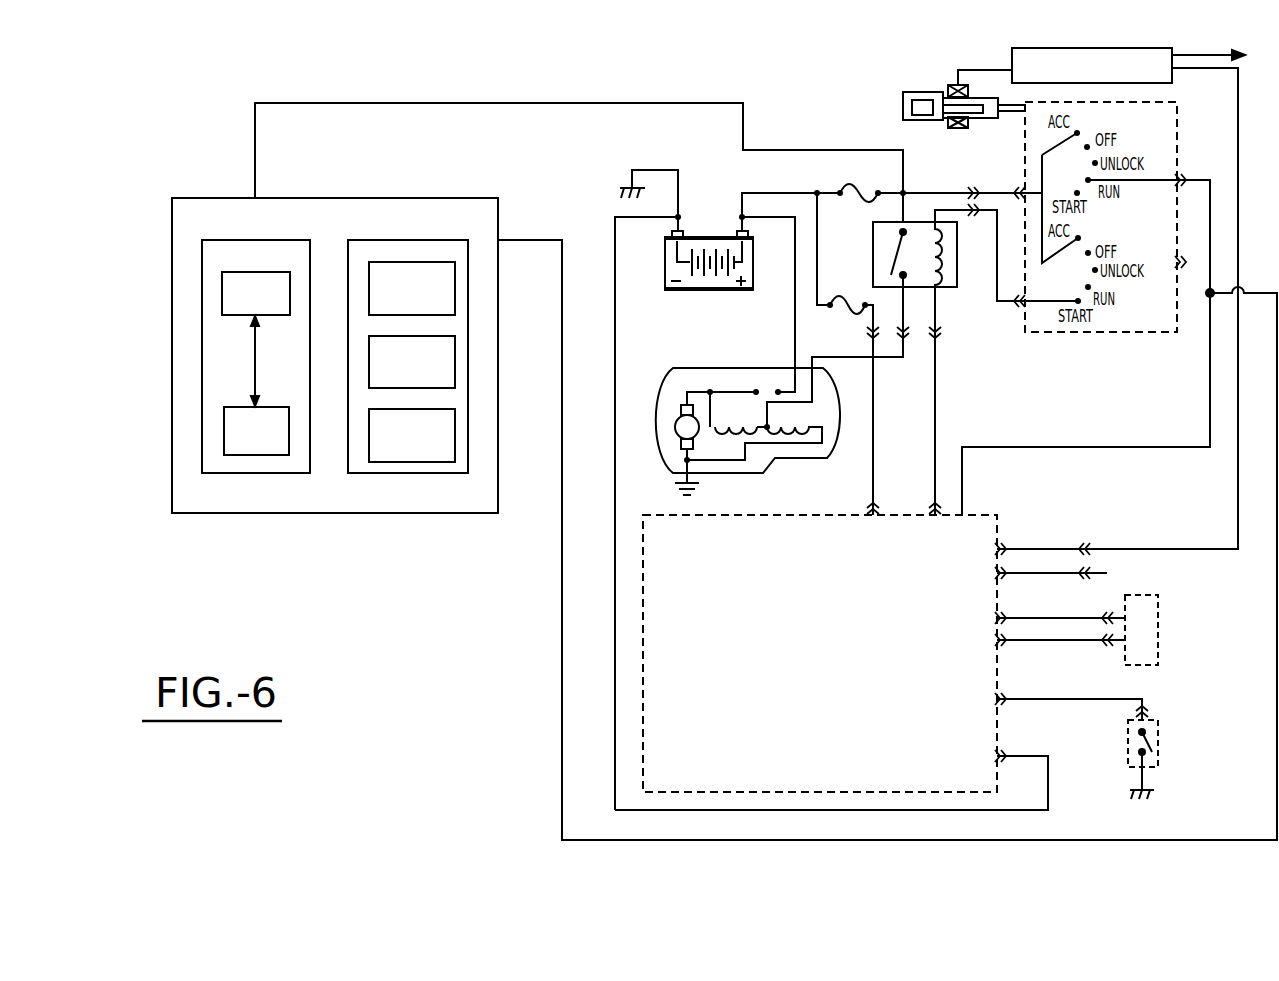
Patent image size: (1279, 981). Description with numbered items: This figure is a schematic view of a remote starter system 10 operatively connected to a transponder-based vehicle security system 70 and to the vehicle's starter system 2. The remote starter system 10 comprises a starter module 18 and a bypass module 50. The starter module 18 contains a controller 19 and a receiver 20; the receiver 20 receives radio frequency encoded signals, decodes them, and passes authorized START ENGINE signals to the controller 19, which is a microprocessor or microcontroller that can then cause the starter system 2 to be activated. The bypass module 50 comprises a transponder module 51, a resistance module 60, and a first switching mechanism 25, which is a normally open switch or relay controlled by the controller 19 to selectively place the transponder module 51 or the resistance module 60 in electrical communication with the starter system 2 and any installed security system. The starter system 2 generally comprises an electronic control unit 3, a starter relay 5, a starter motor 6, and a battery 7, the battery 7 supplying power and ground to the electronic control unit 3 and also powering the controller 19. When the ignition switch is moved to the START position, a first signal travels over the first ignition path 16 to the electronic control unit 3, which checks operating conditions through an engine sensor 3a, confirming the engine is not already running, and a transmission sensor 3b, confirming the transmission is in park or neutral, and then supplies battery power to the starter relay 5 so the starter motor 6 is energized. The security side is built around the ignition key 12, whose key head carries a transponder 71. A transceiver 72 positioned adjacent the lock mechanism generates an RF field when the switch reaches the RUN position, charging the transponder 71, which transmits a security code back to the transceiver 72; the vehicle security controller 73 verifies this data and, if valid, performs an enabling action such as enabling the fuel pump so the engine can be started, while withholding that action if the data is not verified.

The starter system 2 is at (540, 645).
The electronic control unit 3 is at (679, 773).
The engine sensor 3a is at (1152, 618).
The transmission sensor 3b is at (1152, 748).
The starter relay 5 is at (950, 287).
The starter motor 6 is at (665, 388).
The battery 7 is at (700, 290).
The remote starter system 10 is at (318, 513).
The ignition key 12 is at (908, 92).
The first ignition path 16 is at (1120, 447).
The starter module 18 is at (203, 357).
The controller 19 is at (268, 305).
The receiver 20 is at (268, 442).
The first switching mechanism 25 is at (424, 297).
The bypass module 50 is at (404, 473).
The transponder module 51 is at (424, 444).
The resistance module 60 is at (424, 370).
The transponder-based vehicle security system 70 is at (900, 58).
The transponder 71 is at (920, 115).
The transceiver 72 is at (955, 128).
The vehicle security controller 73 is at (1105, 77).